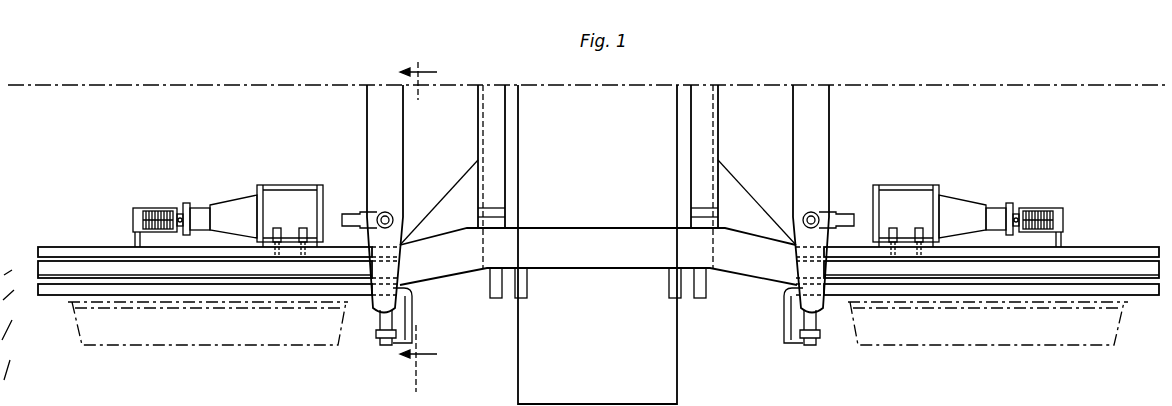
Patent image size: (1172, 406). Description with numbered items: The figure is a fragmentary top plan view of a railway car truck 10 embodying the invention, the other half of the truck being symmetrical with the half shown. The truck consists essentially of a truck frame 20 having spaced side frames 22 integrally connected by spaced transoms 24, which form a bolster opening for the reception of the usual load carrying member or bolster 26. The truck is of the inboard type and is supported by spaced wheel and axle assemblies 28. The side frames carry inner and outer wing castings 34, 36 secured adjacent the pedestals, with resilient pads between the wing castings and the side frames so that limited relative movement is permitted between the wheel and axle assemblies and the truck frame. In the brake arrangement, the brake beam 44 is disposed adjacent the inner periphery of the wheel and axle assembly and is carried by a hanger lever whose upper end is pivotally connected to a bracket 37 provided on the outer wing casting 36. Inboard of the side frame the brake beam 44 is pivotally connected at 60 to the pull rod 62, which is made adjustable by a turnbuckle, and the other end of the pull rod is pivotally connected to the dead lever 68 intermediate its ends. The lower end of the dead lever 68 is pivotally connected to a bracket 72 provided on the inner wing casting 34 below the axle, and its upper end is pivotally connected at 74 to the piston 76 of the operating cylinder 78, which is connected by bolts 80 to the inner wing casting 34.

The apparatus 10 is at (418, 216).
The truck frame 20 is at (733, 266).
The side frames 22 is at (757, 284).
The transoms 24 is at (490, 108).
The bolster 26 is at (649, 89).
The wheel and axle assemblies 28 is at (162, 344).
The inner wing casting 34 is at (72, 247).
The outer wing casting 36 is at (50, 296).
The bracket 37 is at (414, 316).
The brake beam 44 is at (394, 131).
The pivotal connection 60 is at (394, 214).
The pull rod 62 is at (343, 210).
The dead lever 68 is at (147, 210).
The bracket 72 is at (133, 216).
The pivotal connection 74 is at (168, 210).
The piston 76 is at (200, 211).
The operating cylinder 78 is at (281, 190).
The bolts 80 is at (302, 230).